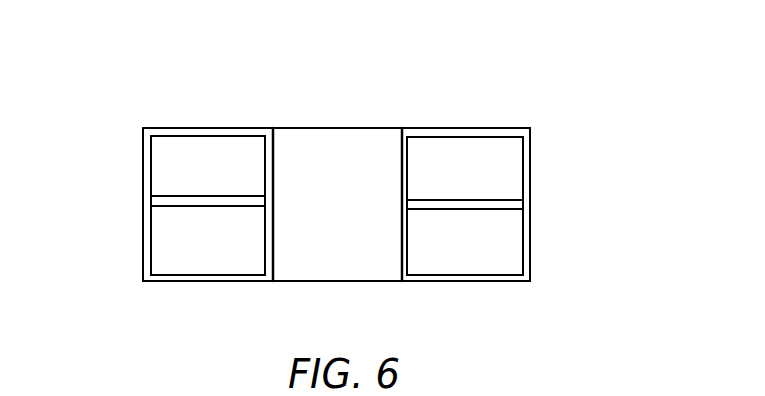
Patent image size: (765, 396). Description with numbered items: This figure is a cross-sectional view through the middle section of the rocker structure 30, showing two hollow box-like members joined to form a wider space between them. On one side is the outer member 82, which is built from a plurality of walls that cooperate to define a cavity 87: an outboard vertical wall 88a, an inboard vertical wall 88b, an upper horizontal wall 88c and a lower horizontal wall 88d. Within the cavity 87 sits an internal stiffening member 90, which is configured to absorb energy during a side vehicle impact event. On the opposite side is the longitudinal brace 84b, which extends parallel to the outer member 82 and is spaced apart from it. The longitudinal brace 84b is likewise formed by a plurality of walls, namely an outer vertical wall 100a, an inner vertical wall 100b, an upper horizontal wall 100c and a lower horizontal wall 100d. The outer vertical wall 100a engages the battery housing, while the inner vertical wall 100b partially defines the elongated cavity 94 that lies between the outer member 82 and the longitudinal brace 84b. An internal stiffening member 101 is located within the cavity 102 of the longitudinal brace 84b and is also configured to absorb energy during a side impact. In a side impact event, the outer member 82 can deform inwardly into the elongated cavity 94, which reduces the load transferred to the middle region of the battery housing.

The rocker structure 30 is at (126, 106).
The outer member 82 is at (206, 108).
The longitudinal brace 84b is at (486, 118).
The cavity 87 is at (198, 246).
The outboard vertical wall 88a is at (150, 153).
The inboard vertical wall 88b is at (273, 157).
The upper horizontal wall 88c is at (236, 129).
The lower horizontal wall 88d is at (225, 276).
The internal stiffening member 90 is at (175, 203).
The elongated cavity 94 is at (303, 222).
The outer vertical wall 100a is at (530, 203).
The inner vertical wall 100b is at (402, 233).
The upper horizontal wall 100c is at (522, 128).
The lower horizontal wall 100d is at (460, 282).
The internal stiffening member 101 is at (479, 208).
The cavity 102 is at (497, 164).